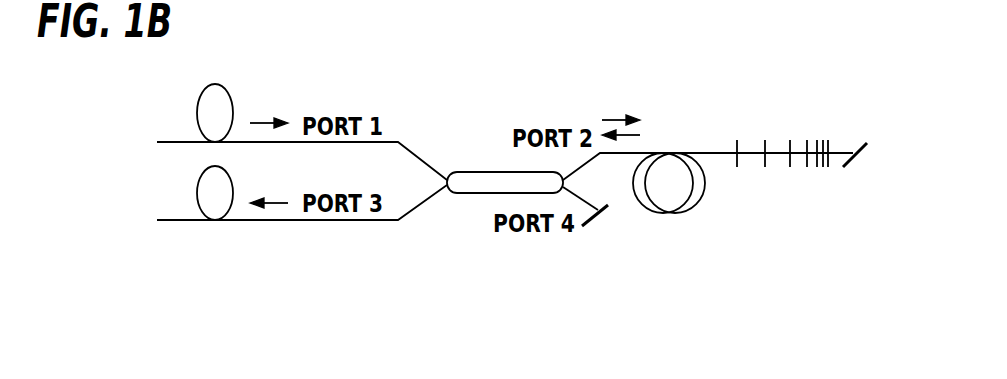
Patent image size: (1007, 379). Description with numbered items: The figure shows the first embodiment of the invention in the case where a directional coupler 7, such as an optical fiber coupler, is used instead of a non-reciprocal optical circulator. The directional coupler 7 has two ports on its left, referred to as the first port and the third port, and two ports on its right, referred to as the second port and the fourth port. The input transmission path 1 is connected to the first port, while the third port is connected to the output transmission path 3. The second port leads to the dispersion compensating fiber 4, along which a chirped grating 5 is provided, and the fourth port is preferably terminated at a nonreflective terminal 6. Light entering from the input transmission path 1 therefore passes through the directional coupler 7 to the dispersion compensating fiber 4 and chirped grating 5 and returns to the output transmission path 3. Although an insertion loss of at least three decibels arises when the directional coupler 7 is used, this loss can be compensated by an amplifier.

The input transmission path 1 is at (198, 145).
The output transmission path 3 is at (198, 222).
The dispersion compensating fiber 4 is at (668, 155).
The chirped grating 5 is at (782, 143).
The nonreflective terminal 6 is at (597, 222).
The directional coupler 7 is at (478, 195).